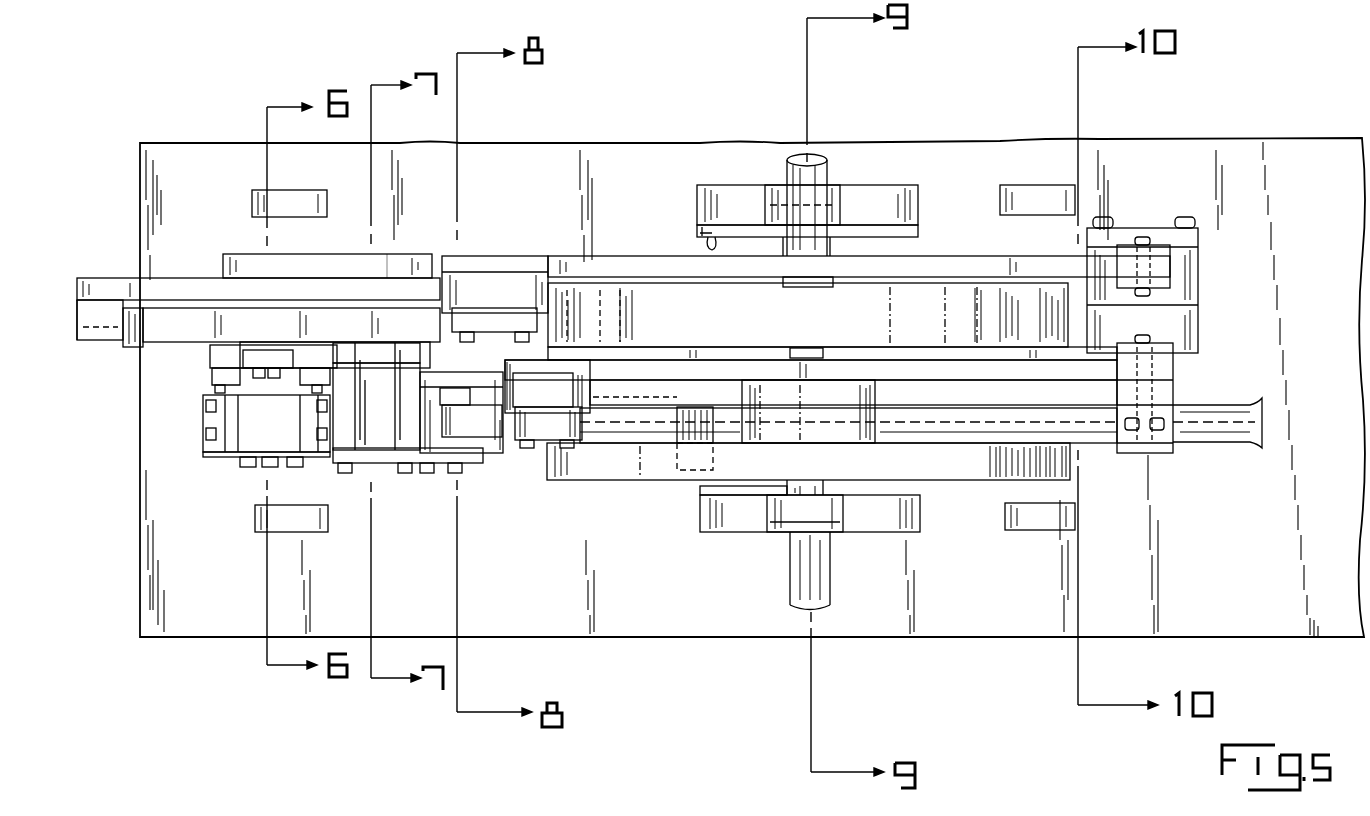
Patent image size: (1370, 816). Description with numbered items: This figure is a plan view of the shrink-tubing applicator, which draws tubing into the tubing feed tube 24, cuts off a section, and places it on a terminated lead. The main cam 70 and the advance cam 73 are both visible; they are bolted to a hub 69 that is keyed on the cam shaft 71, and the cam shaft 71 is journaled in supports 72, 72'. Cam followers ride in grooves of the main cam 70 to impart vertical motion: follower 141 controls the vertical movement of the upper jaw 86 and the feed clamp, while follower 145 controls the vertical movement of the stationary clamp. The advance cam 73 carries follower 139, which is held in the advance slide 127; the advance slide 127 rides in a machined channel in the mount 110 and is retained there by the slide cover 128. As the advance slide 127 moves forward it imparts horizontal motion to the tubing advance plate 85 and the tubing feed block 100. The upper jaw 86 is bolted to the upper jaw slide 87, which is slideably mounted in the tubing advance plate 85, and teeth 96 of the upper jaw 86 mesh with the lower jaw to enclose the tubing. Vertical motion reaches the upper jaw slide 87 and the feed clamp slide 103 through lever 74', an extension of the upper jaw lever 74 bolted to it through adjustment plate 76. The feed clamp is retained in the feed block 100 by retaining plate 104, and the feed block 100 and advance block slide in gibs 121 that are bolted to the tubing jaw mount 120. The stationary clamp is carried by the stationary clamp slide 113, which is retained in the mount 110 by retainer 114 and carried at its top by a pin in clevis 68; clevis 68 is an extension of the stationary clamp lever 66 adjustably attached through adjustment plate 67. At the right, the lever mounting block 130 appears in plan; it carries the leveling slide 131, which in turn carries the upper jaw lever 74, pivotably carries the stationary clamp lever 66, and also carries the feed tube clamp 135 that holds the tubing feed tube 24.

The tubing feed tube 24 is at (1208, 405).
The stationary clamp lever 66 is at (1026, 368).
The adjustment plate 67 is at (592, 380).
The clevis 68 is at (558, 440).
The hub 69 is at (872, 408).
The main cam 70 is at (650, 295).
The cam shaft 71 is at (828, 485).
The support 72 is at (835, 520).
The support 72' is at (807, 201).
The advance cam 73 is at (1020, 478).
The upper jaw lever 74 is at (859, 243).
The lever 74' is at (258, 282).
The adjustment plate 76 is at (508, 283).
The tubing advance plate 85 is at (210, 378).
The upper jaw 86 is at (284, 460).
The upper jaw slide 87 is at (253, 392).
The teeth 96 is at (387, 258).
The tubing feed block 100 is at (388, 340).
The feed clamp slide 103 is at (375, 428).
The retaining plate 104 is at (382, 462).
The mount 110 is at (433, 397).
The stationary clamp slide 113 is at (464, 445).
The retainer 114 is at (450, 457).
The tubing jaw mount 120 is at (218, 283).
The slide gibs 121 is at (80, 318).
The advance slide 127 is at (752, 397).
The slide cover 128 is at (698, 387).
The lever mounting block 130 is at (1200, 327).
The leveling slide 131 is at (1158, 243).
The feed tube clamp 135 is at (1153, 455).
The follower 139 is at (693, 483).
The cam follower 141 is at (805, 287).
The cam follower 145 is at (808, 352).